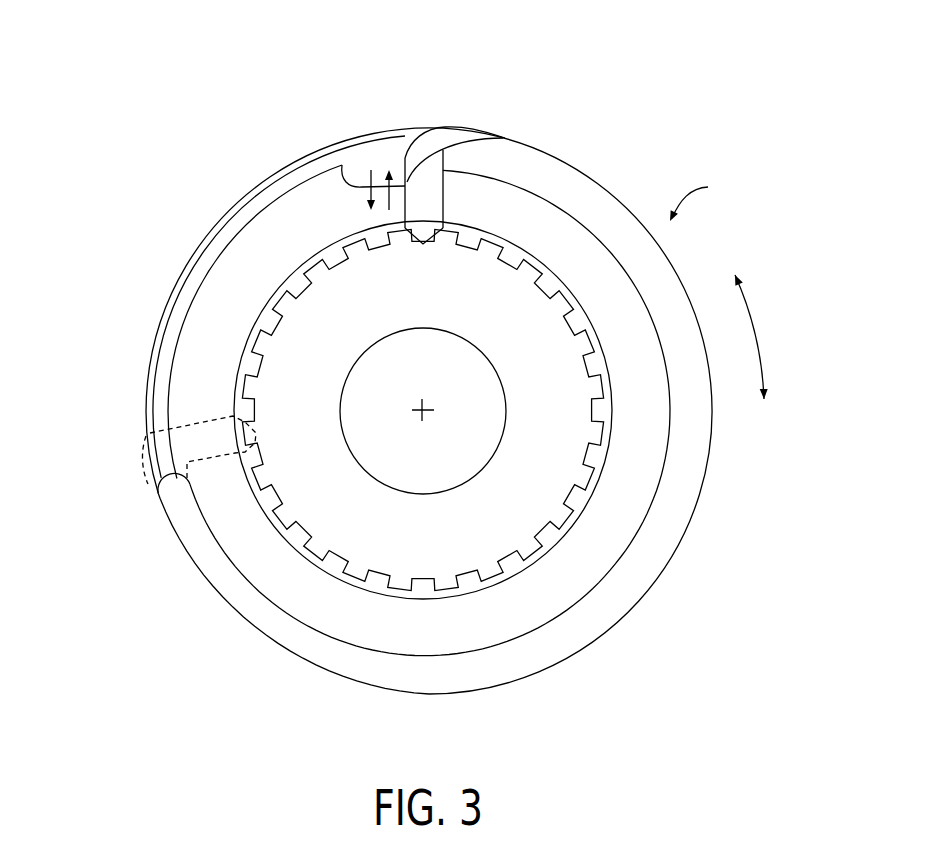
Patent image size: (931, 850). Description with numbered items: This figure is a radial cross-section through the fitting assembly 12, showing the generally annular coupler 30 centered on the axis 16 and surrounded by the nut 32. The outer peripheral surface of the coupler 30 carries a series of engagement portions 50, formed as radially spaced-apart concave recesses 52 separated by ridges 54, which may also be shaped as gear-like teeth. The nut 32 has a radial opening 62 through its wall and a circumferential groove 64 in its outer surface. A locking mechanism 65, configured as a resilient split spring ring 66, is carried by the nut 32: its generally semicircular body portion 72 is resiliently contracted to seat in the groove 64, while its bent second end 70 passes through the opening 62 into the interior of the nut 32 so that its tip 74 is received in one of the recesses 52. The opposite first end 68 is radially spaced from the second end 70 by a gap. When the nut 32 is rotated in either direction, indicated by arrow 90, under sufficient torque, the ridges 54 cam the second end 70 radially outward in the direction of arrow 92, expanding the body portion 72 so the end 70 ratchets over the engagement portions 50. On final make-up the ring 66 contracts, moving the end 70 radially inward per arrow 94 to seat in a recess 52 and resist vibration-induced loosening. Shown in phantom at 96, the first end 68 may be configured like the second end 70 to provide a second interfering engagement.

The fitting assembly 12 is at (750, 97).
The axis 16 is at (428, 408).
The coupler 30 is at (503, 396).
The nut 32 is at (192, 297).
The engagement portions 50 is at (340, 244).
The recesses 52 is at (296, 268).
The ridges 54 is at (310, 258).
The opening 62 is at (418, 130).
The groove 64 is at (580, 192).
The locking mechanism 65 is at (705, 197).
The spring ring 66 is at (182, 553).
The first end 68 is at (152, 486).
The second end 70 is at (445, 206).
The body portion 72 is at (276, 650).
The tip 74 is at (423, 246).
The arrow 90 is at (753, 336).
The arrow 92 is at (457, 160).
The arrow 94 is at (342, 164).
The phantom second end 96 is at (170, 423).